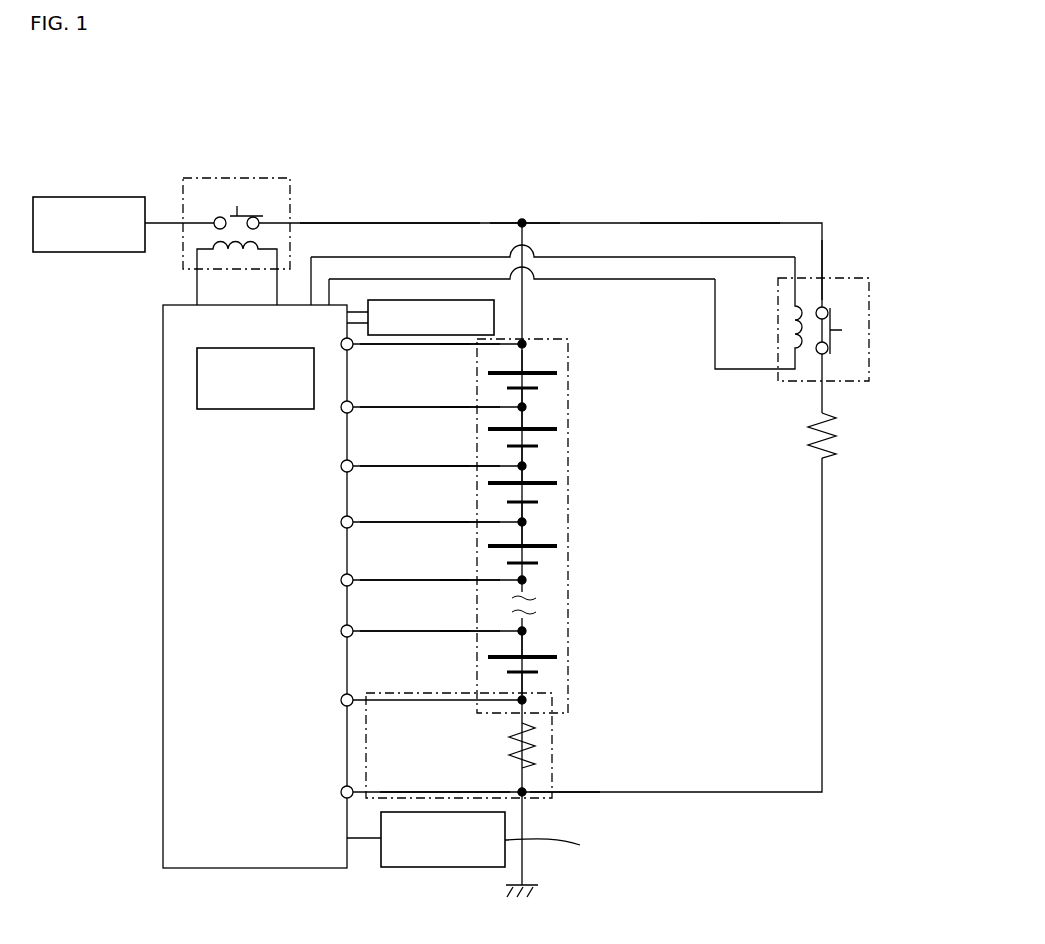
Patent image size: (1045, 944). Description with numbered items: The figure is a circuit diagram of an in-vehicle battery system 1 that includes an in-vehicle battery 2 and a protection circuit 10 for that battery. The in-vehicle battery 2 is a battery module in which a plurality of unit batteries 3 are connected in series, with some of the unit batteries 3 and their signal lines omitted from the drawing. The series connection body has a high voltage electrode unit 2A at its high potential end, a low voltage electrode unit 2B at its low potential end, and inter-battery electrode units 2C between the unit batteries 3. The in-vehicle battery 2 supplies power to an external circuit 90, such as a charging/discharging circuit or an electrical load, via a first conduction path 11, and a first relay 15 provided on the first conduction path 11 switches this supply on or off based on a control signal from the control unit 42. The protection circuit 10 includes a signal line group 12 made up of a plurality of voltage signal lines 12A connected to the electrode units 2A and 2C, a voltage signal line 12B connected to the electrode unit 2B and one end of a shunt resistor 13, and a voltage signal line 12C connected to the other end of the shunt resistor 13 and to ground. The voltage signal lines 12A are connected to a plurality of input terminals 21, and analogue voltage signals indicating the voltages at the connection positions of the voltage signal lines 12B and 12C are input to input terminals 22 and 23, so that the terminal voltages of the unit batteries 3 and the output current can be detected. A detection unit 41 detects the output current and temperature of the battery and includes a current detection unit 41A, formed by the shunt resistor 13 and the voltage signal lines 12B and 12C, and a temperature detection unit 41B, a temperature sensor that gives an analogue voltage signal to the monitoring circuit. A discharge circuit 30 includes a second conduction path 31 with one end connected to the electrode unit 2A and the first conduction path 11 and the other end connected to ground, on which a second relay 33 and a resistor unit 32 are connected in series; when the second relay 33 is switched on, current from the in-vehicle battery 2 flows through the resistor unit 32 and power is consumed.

The in-vehicle battery system 1 is at (766, 107).
The in-vehicle battery 2 is at (568, 562).
The high voltage electrode unit 2A is at (523, 373).
The low voltage electrode unit 2B is at (525, 675).
The inter-battery electrode unit 2C is at (523, 418).
The unit battery 3 is at (572, 360).
The protection circuit 10 is at (524, 180).
The first conduction path 11 is at (370, 223).
The signal line group 12 is at (412, 365).
The voltage signal line 12A is at (442, 349).
The voltage signal line 12B is at (435, 703).
The voltage signal line 12C is at (464, 790).
The shunt resistor 13 is at (540, 738).
The first relay 15 is at (228, 178).
The input terminal 21 is at (342, 341).
The input terminal 22 is at (341, 704).
The input terminal 23 is at (341, 792).
The discharge circuit 30 is at (875, 221).
The second conduction path 31 is at (707, 223).
The resistor unit 32 is at (838, 431).
The second relay 33 is at (869, 334).
The detection unit 41 is at (697, 803).
The current detection unit 41A is at (553, 768).
The temperature detection unit 41B is at (580, 845).
The control unit 42 is at (197, 380).
The external circuit 90 is at (93, 197).